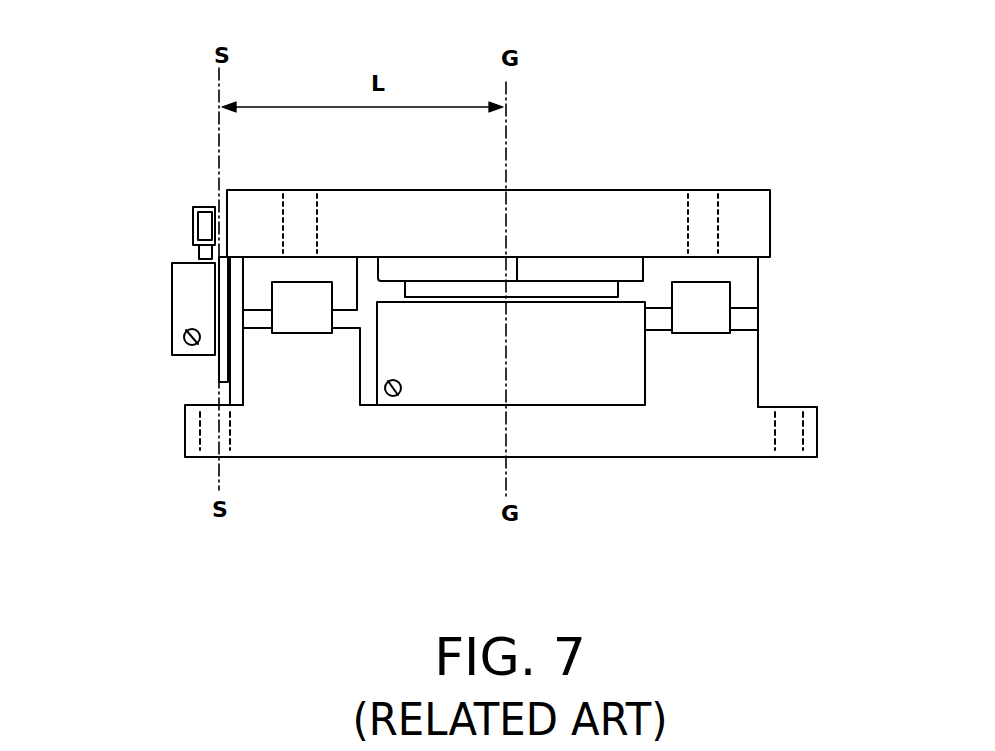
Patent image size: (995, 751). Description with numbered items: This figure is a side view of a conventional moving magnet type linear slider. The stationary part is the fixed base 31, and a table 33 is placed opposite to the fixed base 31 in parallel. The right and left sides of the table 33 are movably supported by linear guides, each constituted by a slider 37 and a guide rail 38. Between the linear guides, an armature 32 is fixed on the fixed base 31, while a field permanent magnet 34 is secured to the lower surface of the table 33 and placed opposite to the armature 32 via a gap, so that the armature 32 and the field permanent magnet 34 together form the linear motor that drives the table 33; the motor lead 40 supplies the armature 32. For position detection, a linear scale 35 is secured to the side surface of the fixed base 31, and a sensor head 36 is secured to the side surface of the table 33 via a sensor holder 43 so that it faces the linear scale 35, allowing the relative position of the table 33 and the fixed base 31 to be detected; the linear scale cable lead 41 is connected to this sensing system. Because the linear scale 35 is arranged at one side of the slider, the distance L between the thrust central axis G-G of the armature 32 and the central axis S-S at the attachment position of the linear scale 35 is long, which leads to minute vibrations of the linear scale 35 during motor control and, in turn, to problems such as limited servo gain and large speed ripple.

The fixed base 31 is at (698, 440).
The armature 32 is at (393, 278).
The table 33 is at (590, 190).
The field permanent magnet 34 is at (585, 283).
The linear scale 35 is at (215, 372).
The sensor head 36 is at (180, 298).
The slider 37 is at (517, 262).
The guide rail 38 is at (718, 310).
The motor lead 40 is at (397, 396).
The linear scale cable lead 41 is at (175, 335).
The sensor holder 43 is at (205, 250).